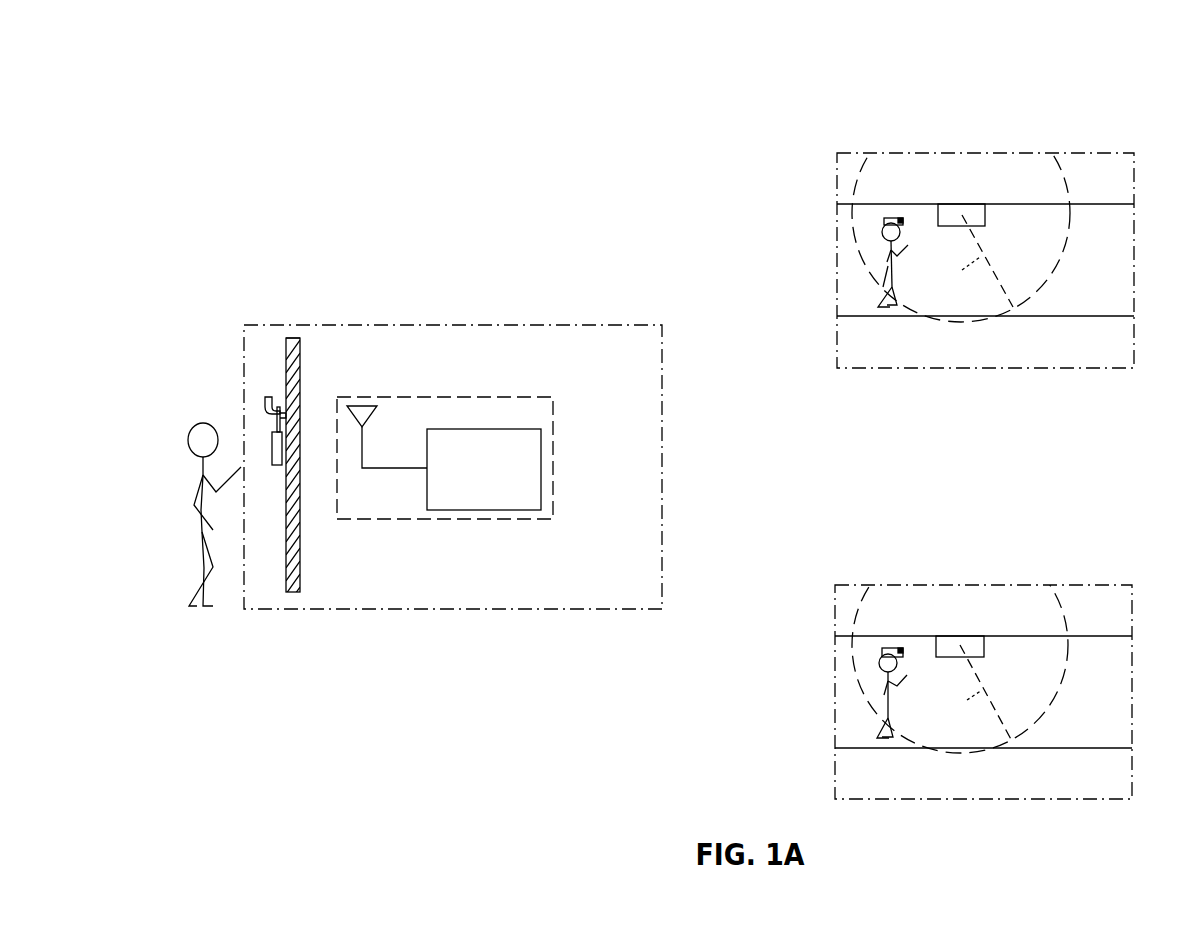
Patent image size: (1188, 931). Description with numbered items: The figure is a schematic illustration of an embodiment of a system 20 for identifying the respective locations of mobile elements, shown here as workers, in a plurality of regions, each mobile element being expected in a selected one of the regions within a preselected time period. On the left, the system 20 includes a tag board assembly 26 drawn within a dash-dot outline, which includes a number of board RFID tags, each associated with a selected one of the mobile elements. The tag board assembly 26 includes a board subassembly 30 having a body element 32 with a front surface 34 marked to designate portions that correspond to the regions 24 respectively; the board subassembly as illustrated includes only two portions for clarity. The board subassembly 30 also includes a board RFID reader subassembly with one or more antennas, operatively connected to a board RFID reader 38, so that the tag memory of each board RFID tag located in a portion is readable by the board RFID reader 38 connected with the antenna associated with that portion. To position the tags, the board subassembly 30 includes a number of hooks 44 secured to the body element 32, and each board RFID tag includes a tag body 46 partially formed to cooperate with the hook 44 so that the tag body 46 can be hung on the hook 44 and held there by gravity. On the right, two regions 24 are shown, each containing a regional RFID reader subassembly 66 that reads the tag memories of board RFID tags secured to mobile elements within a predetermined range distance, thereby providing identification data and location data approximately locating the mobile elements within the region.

The system 20 is at (813, 75).
The region 24 is at (1053, 152).
The tag board assembly 26 is at (553, 322).
The board subassembly 30 is at (300, 595).
The body element 32 is at (296, 567).
The front surface 34 is at (285, 343).
The board RFID reader 38 is at (472, 393).
The hook 44 is at (270, 397).
The tag body 46 is at (273, 426).
The regional RFID reader subassembly 66 is at (978, 213).